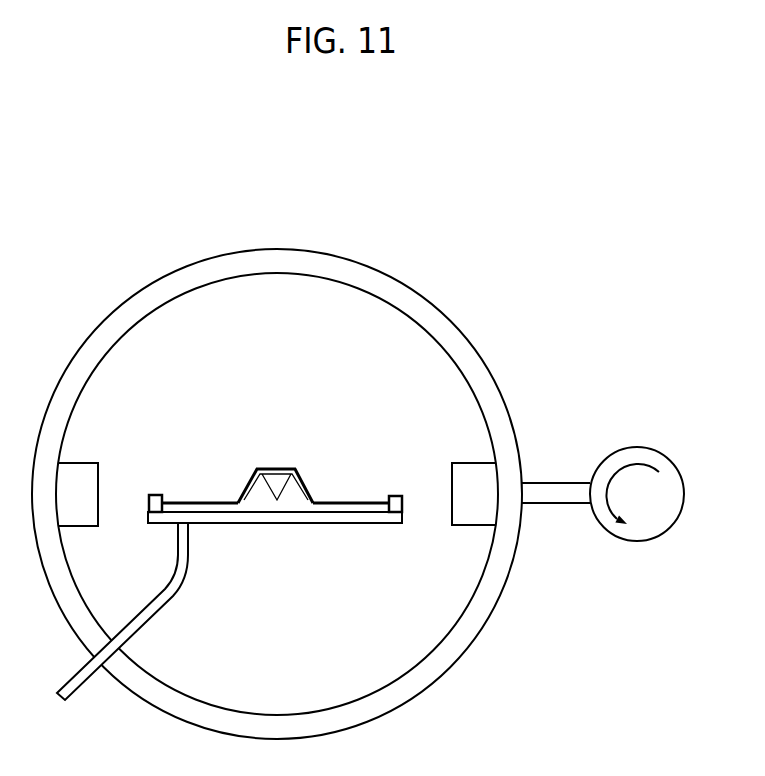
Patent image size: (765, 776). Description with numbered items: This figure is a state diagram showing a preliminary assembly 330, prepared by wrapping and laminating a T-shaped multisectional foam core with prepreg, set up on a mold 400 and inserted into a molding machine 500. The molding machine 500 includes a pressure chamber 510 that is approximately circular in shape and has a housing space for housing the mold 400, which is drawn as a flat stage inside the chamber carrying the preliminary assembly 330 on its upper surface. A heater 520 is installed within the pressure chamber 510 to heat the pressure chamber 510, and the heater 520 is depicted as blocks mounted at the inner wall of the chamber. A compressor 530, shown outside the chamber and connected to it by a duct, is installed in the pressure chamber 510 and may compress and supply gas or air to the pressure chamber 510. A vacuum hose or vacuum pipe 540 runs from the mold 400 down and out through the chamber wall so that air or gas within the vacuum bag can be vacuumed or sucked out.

The molding machine 500 is at (358, 477).
The pressure chamber 510 is at (455, 332).
The heater 520 is at (473, 518).
The compressor 530 is at (637, 447).
The vacuum pipe 540 is at (172, 580).
The mold 400 is at (275, 501).
The preliminary assembly 330 is at (274, 480).